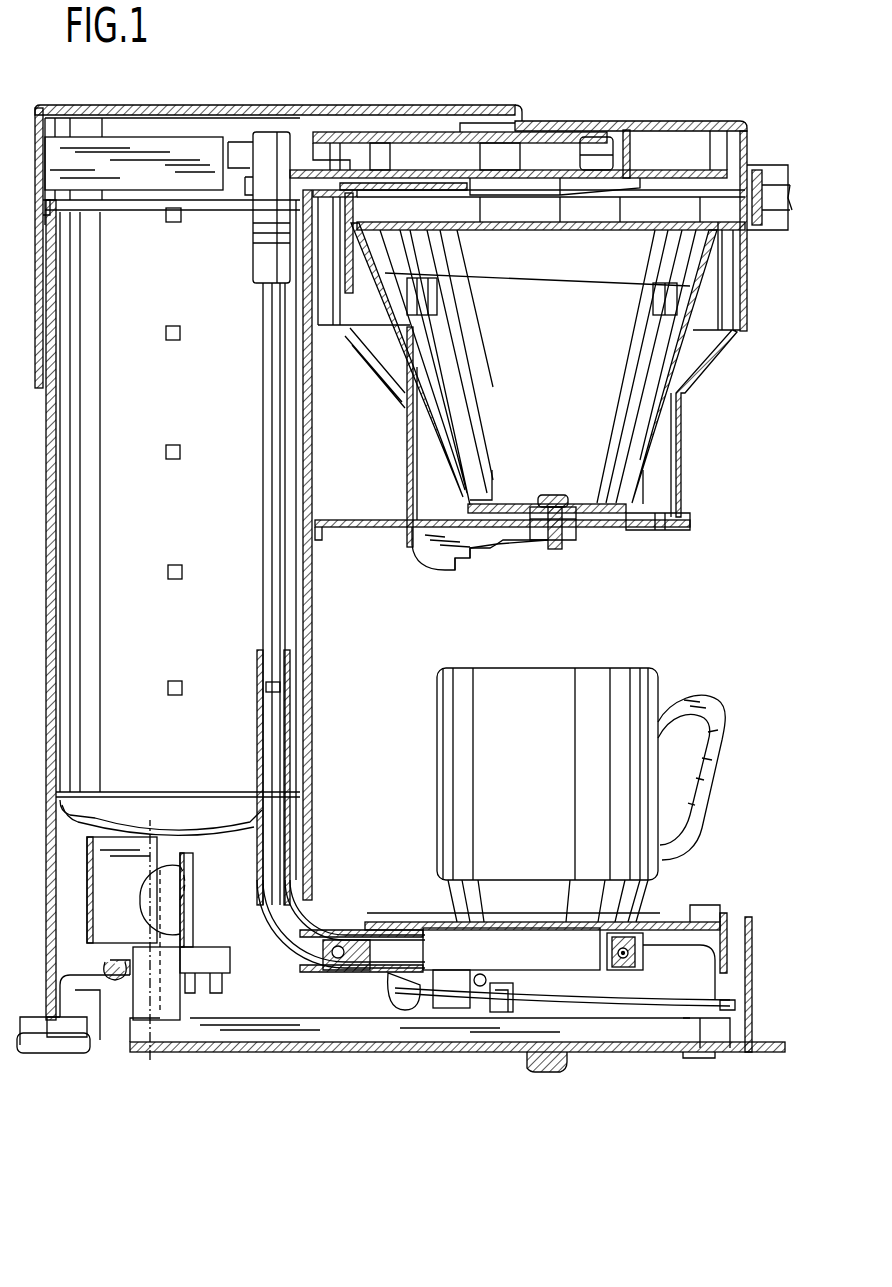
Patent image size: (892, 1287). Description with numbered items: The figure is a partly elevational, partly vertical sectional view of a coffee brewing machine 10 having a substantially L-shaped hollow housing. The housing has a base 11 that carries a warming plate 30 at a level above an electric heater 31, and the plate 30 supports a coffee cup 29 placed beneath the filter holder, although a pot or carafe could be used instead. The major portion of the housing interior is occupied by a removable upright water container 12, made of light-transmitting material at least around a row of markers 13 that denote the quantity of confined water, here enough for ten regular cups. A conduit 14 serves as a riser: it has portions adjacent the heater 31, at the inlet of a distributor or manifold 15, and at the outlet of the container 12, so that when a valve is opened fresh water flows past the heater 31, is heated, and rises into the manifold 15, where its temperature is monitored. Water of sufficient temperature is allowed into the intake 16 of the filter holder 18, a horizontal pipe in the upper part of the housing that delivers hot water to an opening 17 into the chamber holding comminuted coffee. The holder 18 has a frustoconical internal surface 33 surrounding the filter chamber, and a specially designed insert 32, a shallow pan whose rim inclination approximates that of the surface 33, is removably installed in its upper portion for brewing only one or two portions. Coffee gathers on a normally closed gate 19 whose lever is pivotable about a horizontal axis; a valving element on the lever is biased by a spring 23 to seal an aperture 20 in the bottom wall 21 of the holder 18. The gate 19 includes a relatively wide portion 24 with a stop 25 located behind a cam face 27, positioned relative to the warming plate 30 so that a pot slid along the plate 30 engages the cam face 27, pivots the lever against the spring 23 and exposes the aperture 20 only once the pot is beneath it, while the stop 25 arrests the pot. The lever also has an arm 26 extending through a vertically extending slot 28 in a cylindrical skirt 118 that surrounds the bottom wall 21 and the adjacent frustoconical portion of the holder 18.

The machine 10 is at (282, 98).
The base 11 is at (444, 1058).
The water container 12 is at (113, 647).
The markers 13 is at (178, 585).
The conduit 14 is at (262, 372).
The manifold 15 is at (255, 245).
The intake 16 is at (528, 125).
The opening 17 is at (560, 140).
The filter holder 18 is at (693, 437).
The cylindrical skirt 118 is at (684, 487).
The gate 19 is at (484, 560).
The aperture 20 is at (556, 505).
The bottom wall 21 is at (492, 503).
The spring 23 is at (557, 548).
The wide portion 24 is at (428, 555).
The stop 25 is at (468, 566).
The arm 26 is at (360, 530).
The cam face 27 is at (500, 552).
The slot 28 is at (407, 518).
The coffee cup 29 is at (668, 680).
The warming plate 30 is at (676, 920).
The electric heater 31 is at (627, 980).
The insert 32 is at (527, 290).
The frustoconical internal surface 33 is at (685, 334).